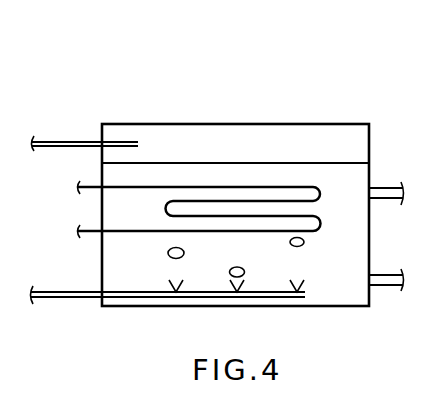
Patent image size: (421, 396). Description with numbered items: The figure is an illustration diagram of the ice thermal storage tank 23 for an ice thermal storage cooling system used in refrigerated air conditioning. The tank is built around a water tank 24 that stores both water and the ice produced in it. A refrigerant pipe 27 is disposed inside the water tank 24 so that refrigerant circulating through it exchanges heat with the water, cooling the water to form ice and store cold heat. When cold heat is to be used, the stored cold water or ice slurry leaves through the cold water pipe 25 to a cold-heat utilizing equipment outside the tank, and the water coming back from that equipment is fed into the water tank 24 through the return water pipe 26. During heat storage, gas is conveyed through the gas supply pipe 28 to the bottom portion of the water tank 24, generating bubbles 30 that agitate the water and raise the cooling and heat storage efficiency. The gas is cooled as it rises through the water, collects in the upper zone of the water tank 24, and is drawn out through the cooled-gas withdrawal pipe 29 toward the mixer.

The ice thermal storage tank 23 is at (248, 70).
The water tank 24 is at (327, 123).
The cold water pipe 25 is at (386, 186).
The return water pipe 26 is at (386, 273).
The refrigerant pipe 27 is at (82, 185).
The gas supply pipe 28 is at (52, 291).
The cooled-gas withdrawal pipe 29 is at (52, 140).
The bubbles 30 is at (304, 244).